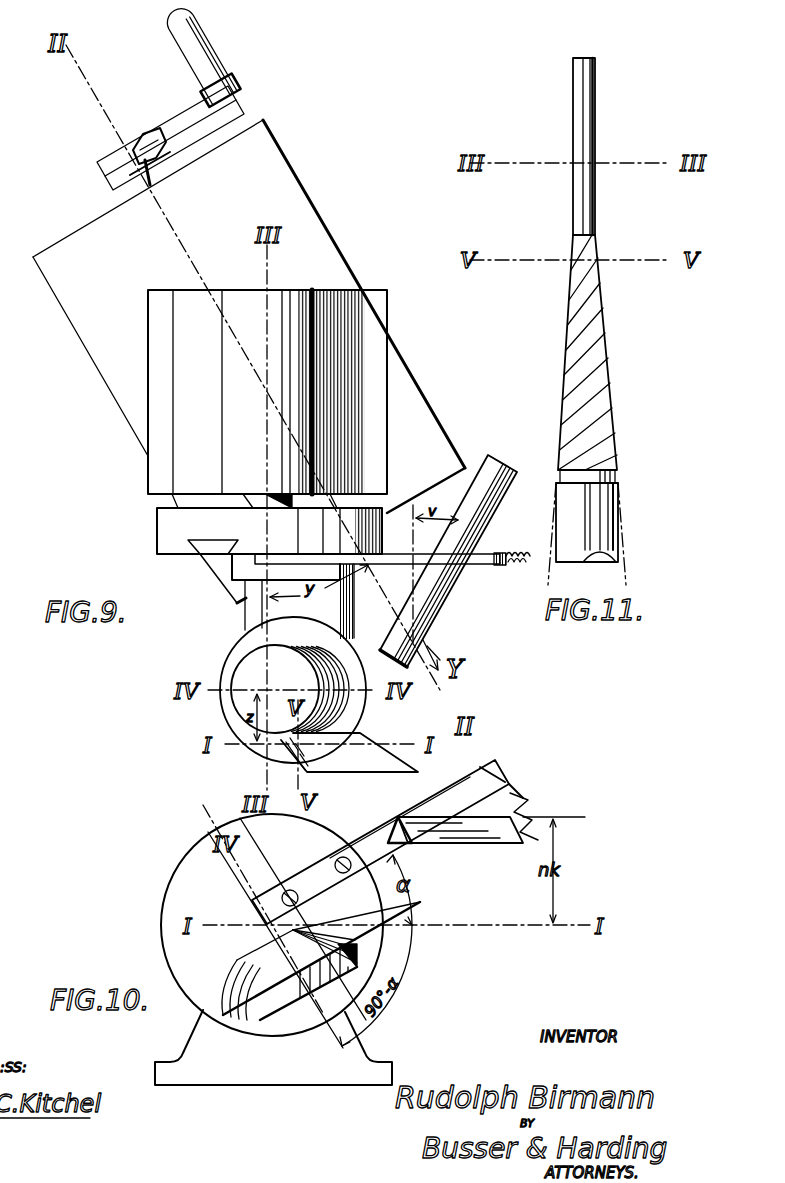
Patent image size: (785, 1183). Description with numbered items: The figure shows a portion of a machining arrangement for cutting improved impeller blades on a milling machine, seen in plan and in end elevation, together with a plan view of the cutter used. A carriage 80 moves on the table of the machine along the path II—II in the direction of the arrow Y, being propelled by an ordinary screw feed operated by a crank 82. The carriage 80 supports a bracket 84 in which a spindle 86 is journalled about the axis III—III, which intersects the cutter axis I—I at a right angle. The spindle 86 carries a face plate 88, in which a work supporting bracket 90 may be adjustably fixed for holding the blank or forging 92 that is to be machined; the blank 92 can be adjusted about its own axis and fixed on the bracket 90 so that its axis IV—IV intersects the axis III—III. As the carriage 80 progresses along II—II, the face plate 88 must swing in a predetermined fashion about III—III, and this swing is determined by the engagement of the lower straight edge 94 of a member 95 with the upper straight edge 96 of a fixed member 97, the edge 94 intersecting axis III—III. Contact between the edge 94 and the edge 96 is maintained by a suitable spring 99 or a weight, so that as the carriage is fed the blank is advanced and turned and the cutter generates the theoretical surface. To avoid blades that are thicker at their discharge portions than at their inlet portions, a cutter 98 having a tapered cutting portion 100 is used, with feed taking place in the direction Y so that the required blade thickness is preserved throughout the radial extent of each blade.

In FIG. 9, the carriage 80 is at (285, 187).
In FIG. 9, the crank 82 is at (207, 60).
In FIG. 9, the bracket 84 is at (300, 300).
In FIG. 9, the spindle 86 is at (265, 500).
In FIG. 9, the face plate 88 is at (172, 522).
In FIG. 9, the work supporting bracket 90 is at (258, 598).
In FIG. 10, the work supporting bracket 90 is at (268, 1012).
In FIG. 9, the blank or forging 92 is at (225, 720).
In FIG. 10, the blank or forging 92 is at (265, 975).
In FIG. 9, the lower straight edge 94 is at (487, 566).
In FIG. 10, the lower straight edge 94 is at (515, 798).
In FIG. 10, the member 95 is at (482, 770).
In FIG. 9, the upper straight edge 96 is at (462, 529).
In FIG. 10, the upper straight edge 96 is at (450, 817).
In FIG. 10, the fixed member 97 is at (455, 843).
In FIG. 11, the cutter 98 is at (596, 214).
In FIG. 9, the spring 99 is at (520, 556).
In FIG. 10, the spring 99 is at (513, 800).
In FIG. 11, the tapered cutting portion 100 is at (612, 388).